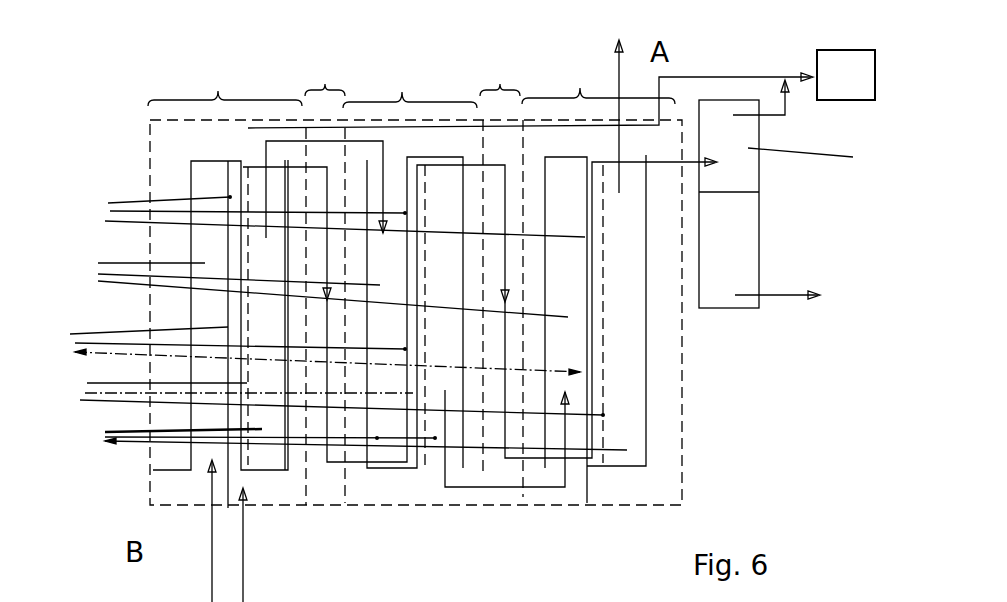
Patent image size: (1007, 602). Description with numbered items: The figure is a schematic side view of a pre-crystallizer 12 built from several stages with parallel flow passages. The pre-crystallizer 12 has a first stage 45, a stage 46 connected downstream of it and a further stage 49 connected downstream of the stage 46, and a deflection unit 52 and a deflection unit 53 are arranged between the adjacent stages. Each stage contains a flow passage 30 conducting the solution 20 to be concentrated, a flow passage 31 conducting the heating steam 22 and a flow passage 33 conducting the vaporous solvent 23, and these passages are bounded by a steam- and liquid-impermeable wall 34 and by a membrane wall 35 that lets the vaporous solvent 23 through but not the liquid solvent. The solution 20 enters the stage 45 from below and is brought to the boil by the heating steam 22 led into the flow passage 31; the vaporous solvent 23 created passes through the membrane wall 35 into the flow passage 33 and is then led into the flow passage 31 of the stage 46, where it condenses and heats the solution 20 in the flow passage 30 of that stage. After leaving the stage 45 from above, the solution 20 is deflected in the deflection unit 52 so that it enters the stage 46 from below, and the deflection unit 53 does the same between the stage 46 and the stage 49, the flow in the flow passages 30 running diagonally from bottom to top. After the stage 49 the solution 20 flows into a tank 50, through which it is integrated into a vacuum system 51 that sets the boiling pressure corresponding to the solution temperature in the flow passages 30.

The pre-crystallizer 12 is at (100, 58).
The solution to be concentrated 20 is at (328, 462).
The heating steam 22 is at (208, 551).
The vaporous solvent 23 is at (385, 146).
The flow passage 30 is at (321, 216).
The flow passage 31 is at (314, 288).
The flow passage 33 is at (345, 437).
The wall 34 is at (309, 351).
The membrane wall 35 is at (320, 400).
The stage 45 is at (225, 279).
The stage 46 is at (410, 261).
The stage 49 is at (598, 259).
The tank 50 is at (762, 223).
The vacuum system 51 is at (843, 48).
The deflection unit 52 is at (325, 279).
The deflection unit 53 is at (501, 276).